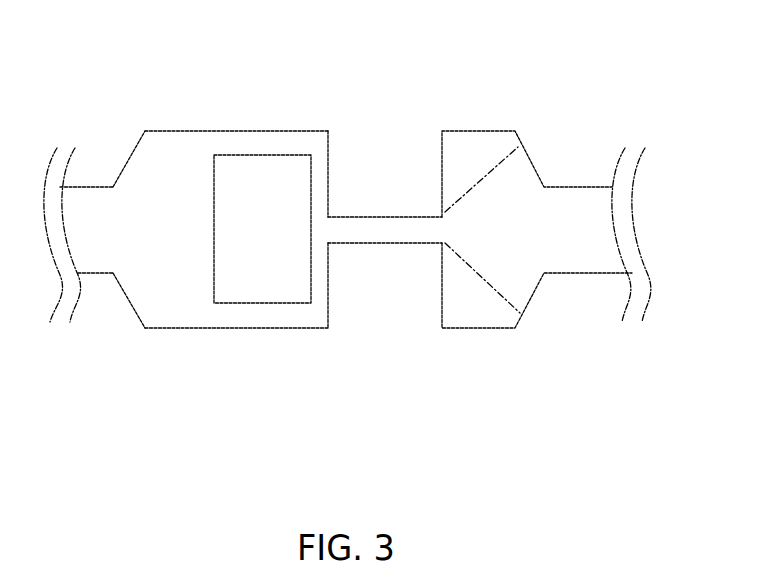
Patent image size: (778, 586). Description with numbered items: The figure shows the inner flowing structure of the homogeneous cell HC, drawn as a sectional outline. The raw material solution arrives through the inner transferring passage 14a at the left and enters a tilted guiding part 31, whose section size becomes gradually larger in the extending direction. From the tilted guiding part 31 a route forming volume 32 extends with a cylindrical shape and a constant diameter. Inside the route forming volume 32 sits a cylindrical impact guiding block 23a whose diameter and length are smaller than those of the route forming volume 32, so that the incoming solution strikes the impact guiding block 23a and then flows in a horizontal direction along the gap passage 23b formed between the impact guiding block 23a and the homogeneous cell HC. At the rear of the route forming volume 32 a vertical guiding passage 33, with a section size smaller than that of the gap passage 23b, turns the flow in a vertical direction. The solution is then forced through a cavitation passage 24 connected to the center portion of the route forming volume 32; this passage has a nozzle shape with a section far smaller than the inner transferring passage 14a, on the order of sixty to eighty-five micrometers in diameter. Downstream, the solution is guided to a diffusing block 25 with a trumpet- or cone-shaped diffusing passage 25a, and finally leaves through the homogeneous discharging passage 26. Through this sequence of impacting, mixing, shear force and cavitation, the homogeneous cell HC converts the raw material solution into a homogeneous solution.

The inner transferring passage 14a is at (97, 273).
The tilted guiding part 31 is at (136, 152).
The route forming volume 32 is at (175, 140).
The gap passage 23b is at (268, 130).
The vertical guiding passage 33 is at (328, 170).
The cavitation passage 24 is at (372, 217).
The impact guiding block 23a is at (285, 275).
The diffusing block 25 is at (478, 147).
The diffusing passage 25a is at (487, 253).
The homogeneous discharging passage 26 is at (575, 187).
The homogeneous cell HC is at (224, 332).